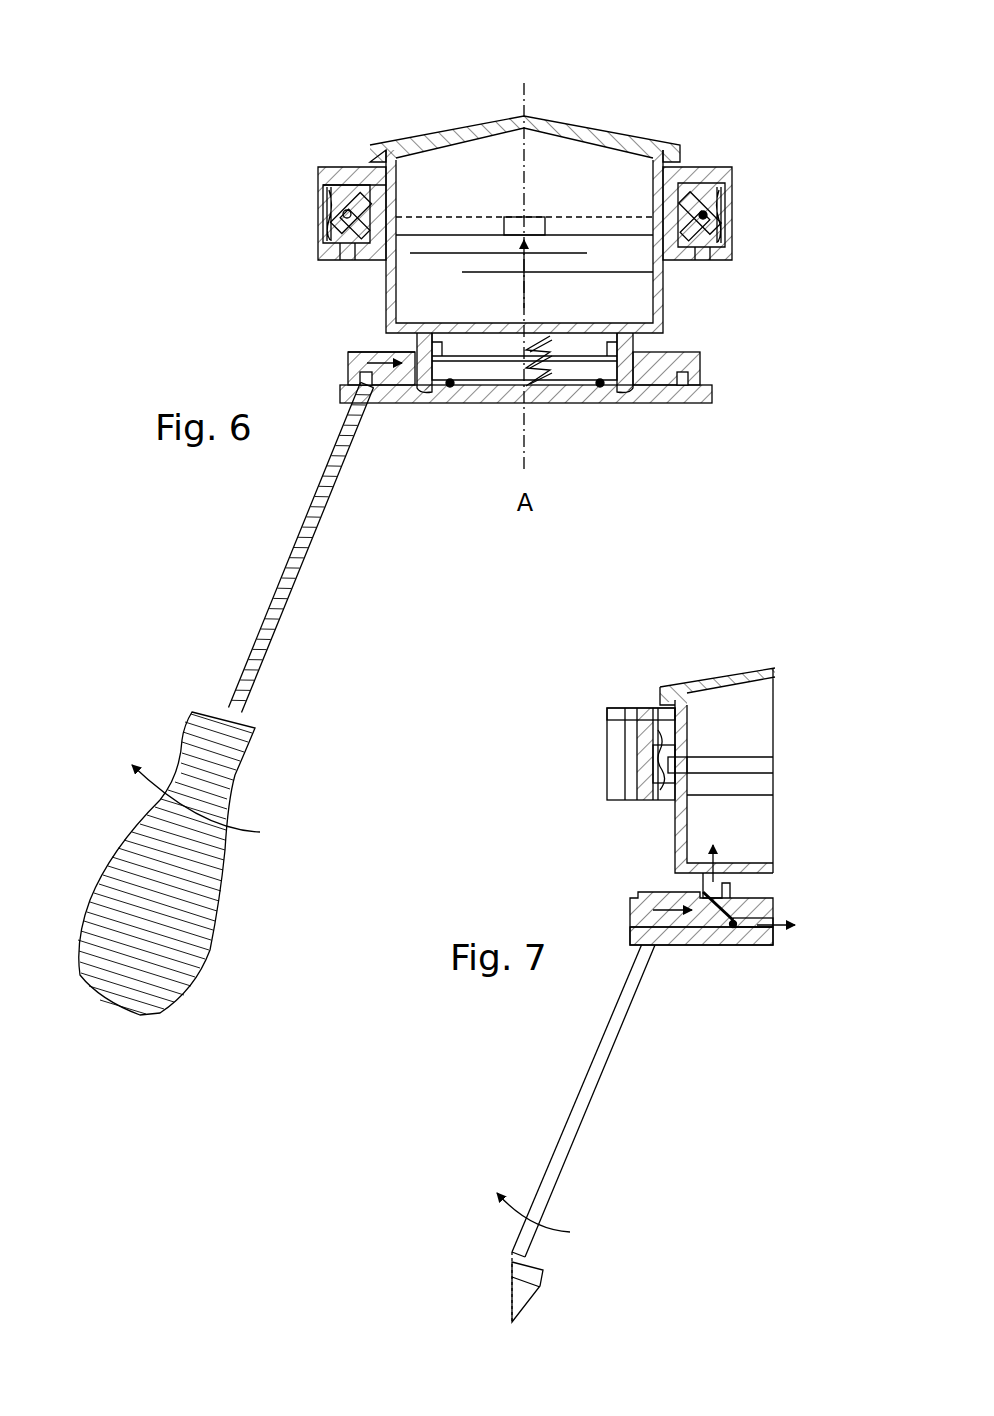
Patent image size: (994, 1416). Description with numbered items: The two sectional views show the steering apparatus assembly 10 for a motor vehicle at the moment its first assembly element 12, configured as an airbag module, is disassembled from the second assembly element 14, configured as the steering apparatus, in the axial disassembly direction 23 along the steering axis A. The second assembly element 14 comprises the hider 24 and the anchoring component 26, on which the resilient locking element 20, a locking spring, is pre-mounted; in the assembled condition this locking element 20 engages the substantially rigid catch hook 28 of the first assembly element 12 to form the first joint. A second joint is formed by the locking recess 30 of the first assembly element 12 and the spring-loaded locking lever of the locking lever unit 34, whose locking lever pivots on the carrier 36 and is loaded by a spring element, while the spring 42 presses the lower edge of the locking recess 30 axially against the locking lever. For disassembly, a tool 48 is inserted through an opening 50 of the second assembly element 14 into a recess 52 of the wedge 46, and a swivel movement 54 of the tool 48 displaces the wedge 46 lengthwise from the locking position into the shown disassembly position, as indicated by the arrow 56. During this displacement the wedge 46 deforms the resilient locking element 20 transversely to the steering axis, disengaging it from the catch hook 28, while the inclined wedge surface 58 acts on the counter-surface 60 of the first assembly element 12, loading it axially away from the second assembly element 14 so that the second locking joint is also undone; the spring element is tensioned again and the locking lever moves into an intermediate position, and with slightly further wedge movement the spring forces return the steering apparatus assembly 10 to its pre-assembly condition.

In FIG. 6, the steering apparatus assembly 10 is at (737, 97).
In FIG. 7, the steering apparatus assembly 10 is at (640, 650).
In FIG. 6, the first assembly element 12 is at (447, 105).
In FIG. 7, the first assembly element 12 is at (752, 727).
In FIG. 6, the second assembly element 14 is at (302, 242).
In FIG. 7, the second assembly element 14 is at (595, 945).
In FIG. 6, the resilient locking element 20 is at (452, 392).
In FIG. 7, the resilient locking element 20 is at (733, 928).
In FIG. 6, the axial disassembly direction 23 is at (545, 258).
In FIG. 6, the hider 24 is at (700, 173).
In FIG. 7, the hider 24 is at (633, 713).
In FIG. 6, the anchoring component 26 is at (382, 400).
In FIG. 7, the anchoring component 26 is at (690, 942).
In FIG. 6, the catch hook 28 is at (628, 395).
In FIG. 6, the locking recess 30 is at (373, 180).
In FIG. 6, the locking lever unit 34 is at (740, 240).
In FIG. 7, the locking lever unit 34 is at (598, 752).
In FIG. 7, the carrier 36 is at (630, 778).
In FIG. 6, the spring 42 is at (512, 387).
In FIG. 6, the wedge 46 is at (668, 360).
In FIG. 7, the wedge 46 is at (652, 920).
In FIG. 6, the tool 48 is at (280, 597).
In FIG. 7, the tool 48 is at (595, 1077).
In FIG. 6, the opening 50 is at (690, 397).
In FIG. 6, the recess 52 is at (680, 377).
In FIG. 6, the swivel movement 54 is at (230, 825).
In FIG. 7, the swivel movement 54 is at (550, 1225).
In FIG. 6, the arrow 56 is at (378, 358).
In FIG. 7, the arrow 56 is at (667, 900).
In FIG. 7, the inclined wedge surface 58 is at (730, 915).
In FIG. 7, the counter-surface 60 is at (707, 910).